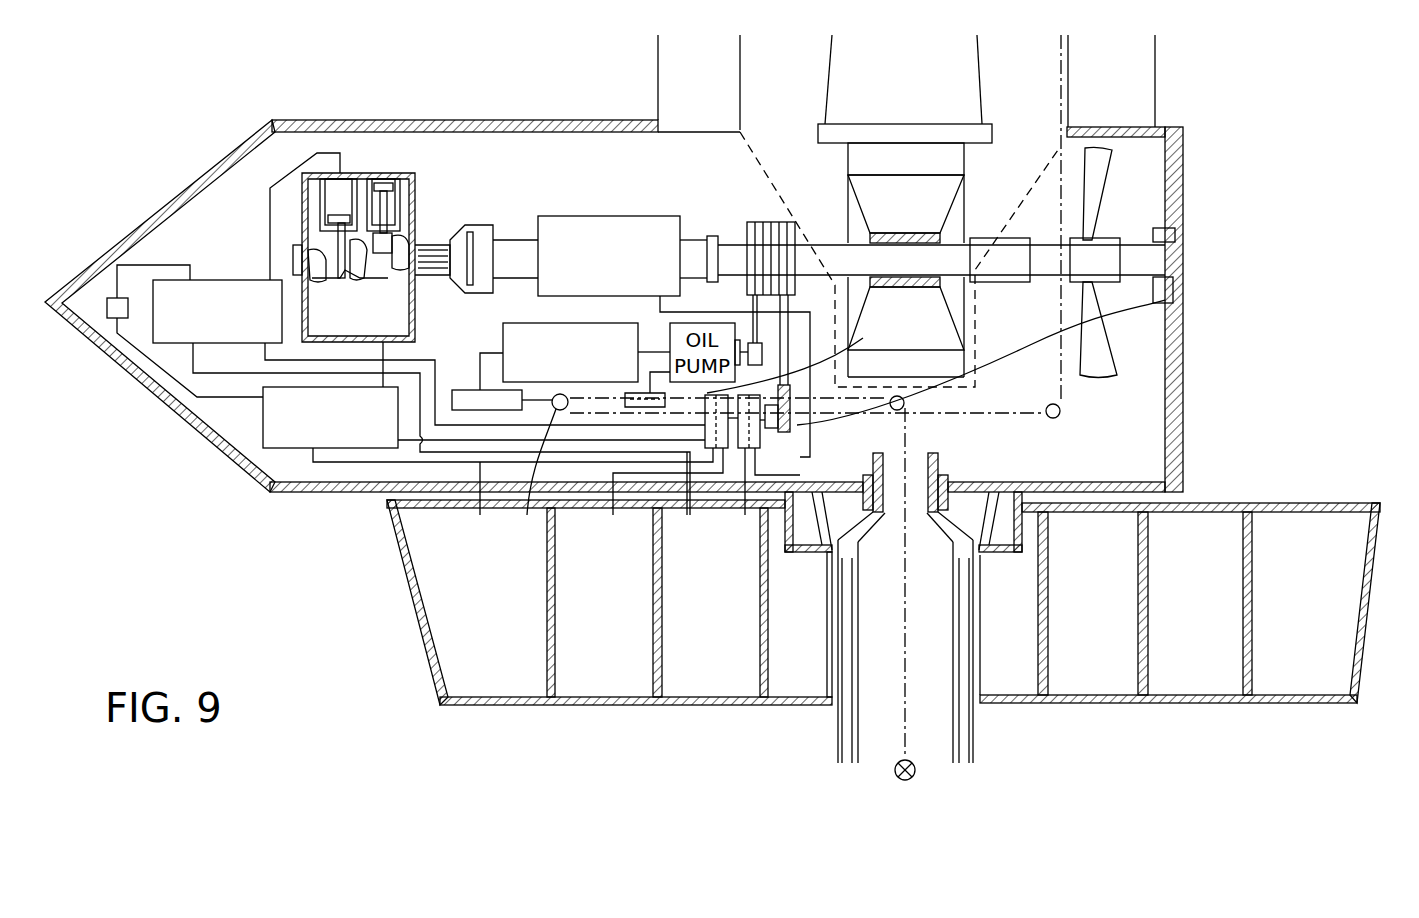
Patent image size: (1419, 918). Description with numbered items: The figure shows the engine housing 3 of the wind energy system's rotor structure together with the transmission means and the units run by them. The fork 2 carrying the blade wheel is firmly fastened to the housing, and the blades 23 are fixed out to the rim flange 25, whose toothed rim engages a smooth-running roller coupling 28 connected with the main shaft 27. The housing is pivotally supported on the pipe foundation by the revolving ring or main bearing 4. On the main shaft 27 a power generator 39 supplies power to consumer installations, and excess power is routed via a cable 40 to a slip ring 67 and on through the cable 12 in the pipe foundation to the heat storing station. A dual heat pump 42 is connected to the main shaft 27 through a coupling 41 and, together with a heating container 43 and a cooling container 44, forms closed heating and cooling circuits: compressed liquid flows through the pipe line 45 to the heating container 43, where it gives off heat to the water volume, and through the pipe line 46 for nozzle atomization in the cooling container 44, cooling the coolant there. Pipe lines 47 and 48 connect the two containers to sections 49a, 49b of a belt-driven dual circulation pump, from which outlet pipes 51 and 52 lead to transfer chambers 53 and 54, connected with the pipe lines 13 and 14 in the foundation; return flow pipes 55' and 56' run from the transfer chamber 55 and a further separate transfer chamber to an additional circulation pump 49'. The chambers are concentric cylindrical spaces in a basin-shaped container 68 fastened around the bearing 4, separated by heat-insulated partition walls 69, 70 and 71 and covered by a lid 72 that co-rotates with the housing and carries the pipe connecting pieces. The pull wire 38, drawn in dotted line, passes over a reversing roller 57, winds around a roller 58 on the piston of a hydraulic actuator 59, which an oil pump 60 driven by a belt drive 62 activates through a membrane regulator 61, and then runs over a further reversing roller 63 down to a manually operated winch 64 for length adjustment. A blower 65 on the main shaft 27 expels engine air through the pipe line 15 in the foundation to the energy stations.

The fork 2 is at (658, 62).
The engine housing 3 is at (421, 118).
The revolving ring 4 is at (813, 536).
The cable 12 is at (963, 727).
The pipe line 13 is at (843, 715).
The pipe line 14 is at (843, 752).
The pipe line 15 is at (975, 758).
The blades 23 is at (967, 92).
The rim flange 25 is at (993, 131).
The main shaft 27 is at (945, 253).
The roller coupling 28 is at (952, 160).
The pull wire 38 is at (1067, 108).
The power generator 39 is at (615, 216).
The cable 40 is at (660, 312).
The coupling 41 is at (455, 226).
The dual heat pump 42 is at (368, 173).
The heating container 43 is at (222, 278).
The cooling container 44 is at (263, 418).
The pipe line 45 is at (293, 172).
The pipe line 46 is at (160, 368).
The pipe line 47 is at (430, 358).
The pipe line 48 is at (415, 440).
The section of dual circulation pump 49a is at (806, 355).
The section of dual circulation pump 49b is at (851, 426).
The additional circulation pump 49' is at (780, 429).
The outlet pipe 51 is at (480, 512).
The outlet pipe 52 is at (613, 512).
The transfer chamber 53 is at (497, 651).
The transfer chamber 54 is at (617, 651).
The transfer chamber 55 is at (711, 602).
The return flow pipe 55' is at (726, 502).
The return flow pipe 56' is at (798, 468).
The reversing roller 57 is at (1061, 411).
The roller 58 is at (527, 510).
The hydraulic actuator 59 is at (460, 394).
The oil pump 60 is at (687, 512).
The membrane regulator 61 is at (533, 323).
The belt drive 62 is at (752, 300).
The reversing roller 63 is at (905, 404).
The manually operated winch 64 is at (908, 762).
The blower 65 is at (1100, 180).
The slip ring 67 is at (948, 459).
The container 68 is at (411, 631).
The partition wall 69 is at (560, 684).
The partition wall 70 is at (662, 684).
The partition wall 71 is at (768, 684).
The lid 72 is at (1262, 503).